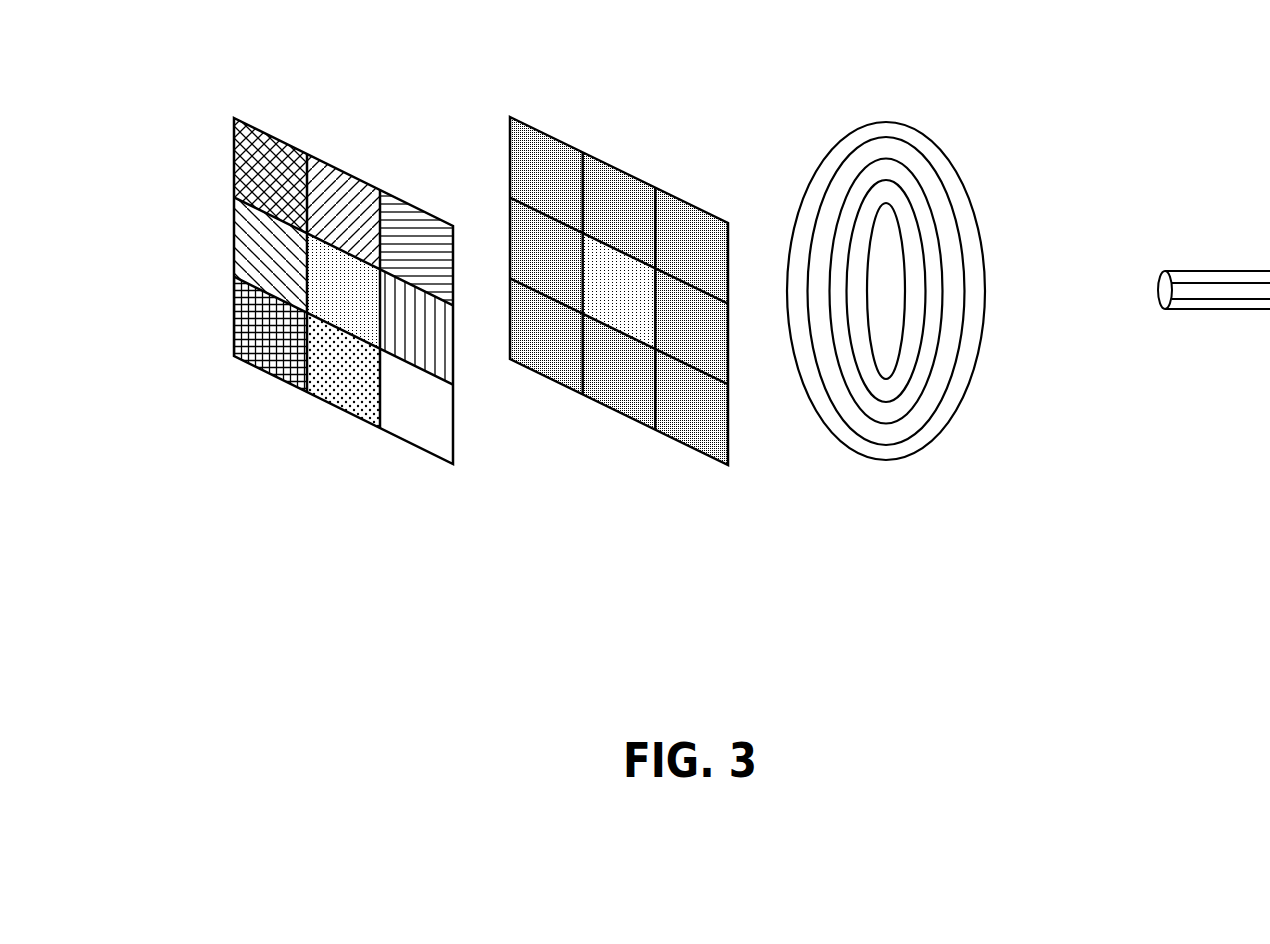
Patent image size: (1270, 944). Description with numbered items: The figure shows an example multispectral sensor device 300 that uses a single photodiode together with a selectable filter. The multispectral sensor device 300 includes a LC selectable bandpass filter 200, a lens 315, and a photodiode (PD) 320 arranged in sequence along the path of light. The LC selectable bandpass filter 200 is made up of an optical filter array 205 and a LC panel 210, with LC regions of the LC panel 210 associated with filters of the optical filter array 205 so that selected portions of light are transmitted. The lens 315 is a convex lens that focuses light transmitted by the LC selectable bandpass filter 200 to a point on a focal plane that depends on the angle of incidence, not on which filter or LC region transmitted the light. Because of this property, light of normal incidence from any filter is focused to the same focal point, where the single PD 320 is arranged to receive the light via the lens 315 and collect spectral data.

The multispectral sensor device 300 is at (180, 39).
The LC selectable bandpass filter 200 is at (230, 495).
The optical filter array 205 is at (265, 291).
The LC panel 210 is at (619, 285).
The lens 315 is at (894, 271).
The photodiode (PD) 320 is at (1214, 259).